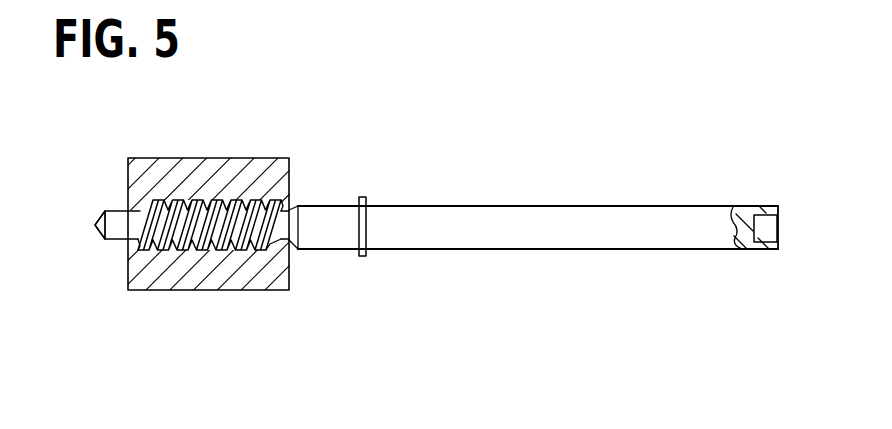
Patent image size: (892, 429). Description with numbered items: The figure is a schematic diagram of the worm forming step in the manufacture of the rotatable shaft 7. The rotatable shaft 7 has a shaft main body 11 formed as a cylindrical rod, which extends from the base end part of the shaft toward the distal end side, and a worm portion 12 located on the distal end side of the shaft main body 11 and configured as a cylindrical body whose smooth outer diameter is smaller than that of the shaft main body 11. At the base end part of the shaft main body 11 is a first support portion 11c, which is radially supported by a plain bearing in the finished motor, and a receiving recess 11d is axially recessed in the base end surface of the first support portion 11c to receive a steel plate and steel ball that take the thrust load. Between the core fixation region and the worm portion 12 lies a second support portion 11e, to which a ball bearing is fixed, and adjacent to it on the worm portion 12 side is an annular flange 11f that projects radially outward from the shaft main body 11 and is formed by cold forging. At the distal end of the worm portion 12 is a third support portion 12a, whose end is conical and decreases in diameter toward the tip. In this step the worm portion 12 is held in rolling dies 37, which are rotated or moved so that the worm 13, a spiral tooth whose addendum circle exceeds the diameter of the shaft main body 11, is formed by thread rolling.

The rotatable shaft 7 is at (560, 206).
The shaft main body 11 is at (470, 239).
The first support portion 11c is at (742, 207).
The receiving recess 11d is at (772, 220).
The second support portion 11e is at (386, 206).
The flange 11f is at (361, 257).
The worm portion 12 is at (268, 246).
The third support portion 12a is at (113, 234).
The worm 13 is at (197, 246).
The rolling dies 37 is at (210, 170).